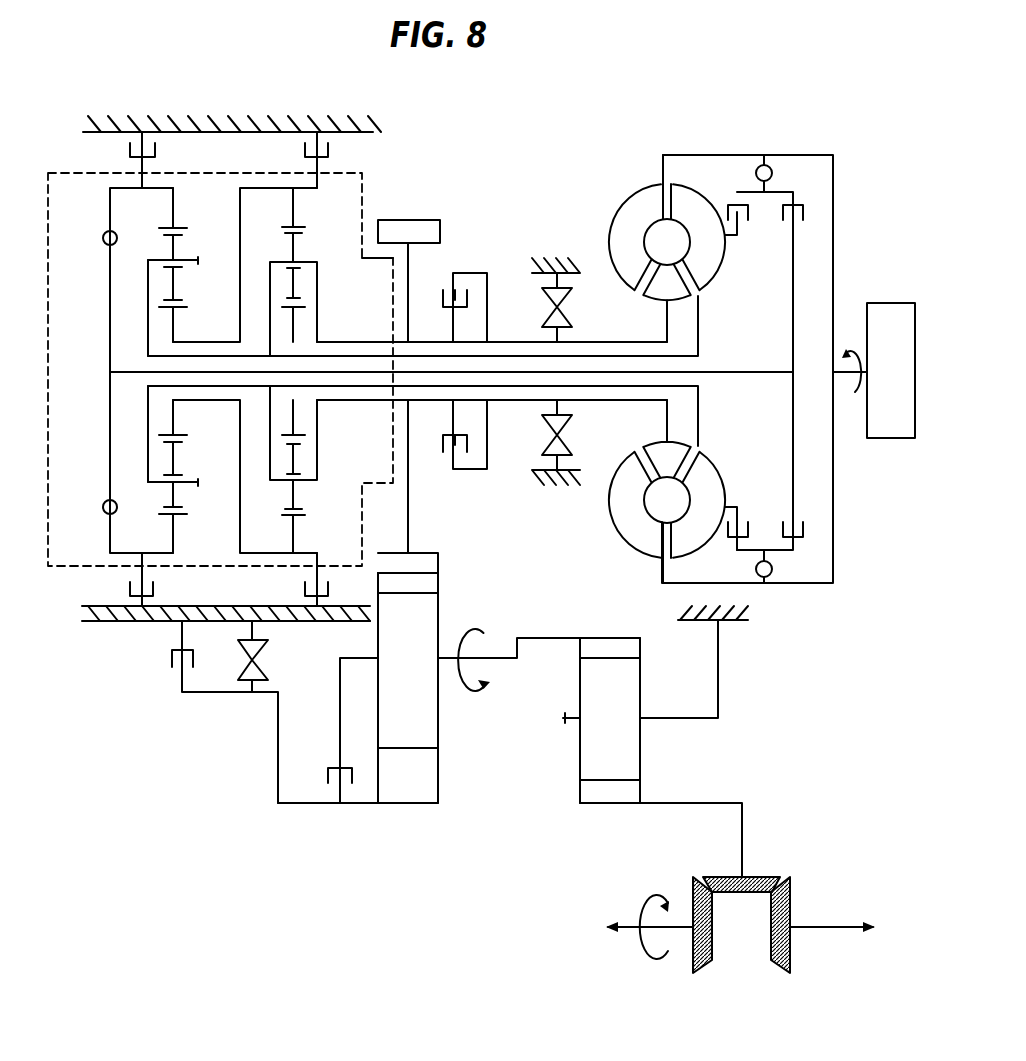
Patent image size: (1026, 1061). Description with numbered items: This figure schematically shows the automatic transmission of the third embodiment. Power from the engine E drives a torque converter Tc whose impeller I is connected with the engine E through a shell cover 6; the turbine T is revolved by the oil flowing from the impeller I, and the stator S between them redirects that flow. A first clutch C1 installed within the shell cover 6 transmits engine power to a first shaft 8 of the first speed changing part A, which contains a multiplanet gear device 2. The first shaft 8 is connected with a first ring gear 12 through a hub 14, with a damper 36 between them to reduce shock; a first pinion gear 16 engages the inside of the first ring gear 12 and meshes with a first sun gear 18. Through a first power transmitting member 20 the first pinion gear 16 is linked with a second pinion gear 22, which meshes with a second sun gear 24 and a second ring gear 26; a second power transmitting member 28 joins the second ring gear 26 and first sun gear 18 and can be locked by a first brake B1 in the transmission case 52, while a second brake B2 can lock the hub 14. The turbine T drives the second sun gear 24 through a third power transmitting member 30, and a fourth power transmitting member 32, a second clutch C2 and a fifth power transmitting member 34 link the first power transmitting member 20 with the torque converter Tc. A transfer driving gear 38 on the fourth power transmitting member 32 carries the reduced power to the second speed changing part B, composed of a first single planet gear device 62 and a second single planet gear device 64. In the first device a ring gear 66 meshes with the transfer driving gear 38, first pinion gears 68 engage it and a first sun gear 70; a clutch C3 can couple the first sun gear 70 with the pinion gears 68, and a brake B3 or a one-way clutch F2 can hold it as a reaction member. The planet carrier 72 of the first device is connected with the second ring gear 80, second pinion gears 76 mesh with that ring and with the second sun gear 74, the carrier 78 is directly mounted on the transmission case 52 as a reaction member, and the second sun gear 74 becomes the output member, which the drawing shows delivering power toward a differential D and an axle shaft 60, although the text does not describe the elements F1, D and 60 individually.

The multiplanet gear device 2 is at (60, 172).
The shell cover 6 is at (747, 155).
The first shaft 8 is at (752, 368).
The first ring gear 12 is at (172, 230).
The hub 14 is at (108, 303).
The first pinion gear 16 is at (184, 301).
The first sun gear 18 is at (183, 308).
The first power transmitting member 20 is at (160, 358).
The second pinion gear 22 is at (305, 234).
The second sun gear 24 is at (305, 308).
The second ring gear 26 is at (290, 227).
The second power transmitting member 28 is at (238, 215).
The third power transmitting member 30 is at (697, 358).
The fourth power transmitting member 32 is at (318, 283).
The fifth power transmitting member 34 is at (510, 340).
The damper 36 is at (103, 238).
The transfer driving gear 38 is at (440, 233).
The transmission case 52 is at (242, 118).
The axle shaft 60 is at (833, 925).
The first single planet gear device 62 is at (388, 829).
The second single planet gear device 64 is at (575, 812).
The ring gear 66 is at (430, 584).
The first pinion gears 68 is at (430, 716).
The first sun gear 70 is at (408, 790).
The planet carrier 72 is at (540, 636).
The second sun gear 74 is at (612, 795).
The second pinion gears 76 is at (590, 748).
The carrier 78 is at (717, 655).
The second ring gear 80 is at (615, 645).
The first speed changing part A is at (372, 206).
The second speed changing part B is at (303, 814).
The differential D is at (805, 877).
The engine E is at (874, 370).
The impeller I is at (623, 226).
The stator S is at (655, 295).
The turbine T is at (718, 258).
The torque converter Tc is at (681, 150).
The first brake B1 is at (334, 369).
The second brake B2 is at (160, 369).
The brake B3 is at (255, 712).
The first clutch C1 is at (782, 369).
The second clutch C2 is at (453, 365).
The clutch C3 is at (335, 730).
The first one-way clutch F1 is at (568, 371).
The one-way clutch F2 is at (269, 656).